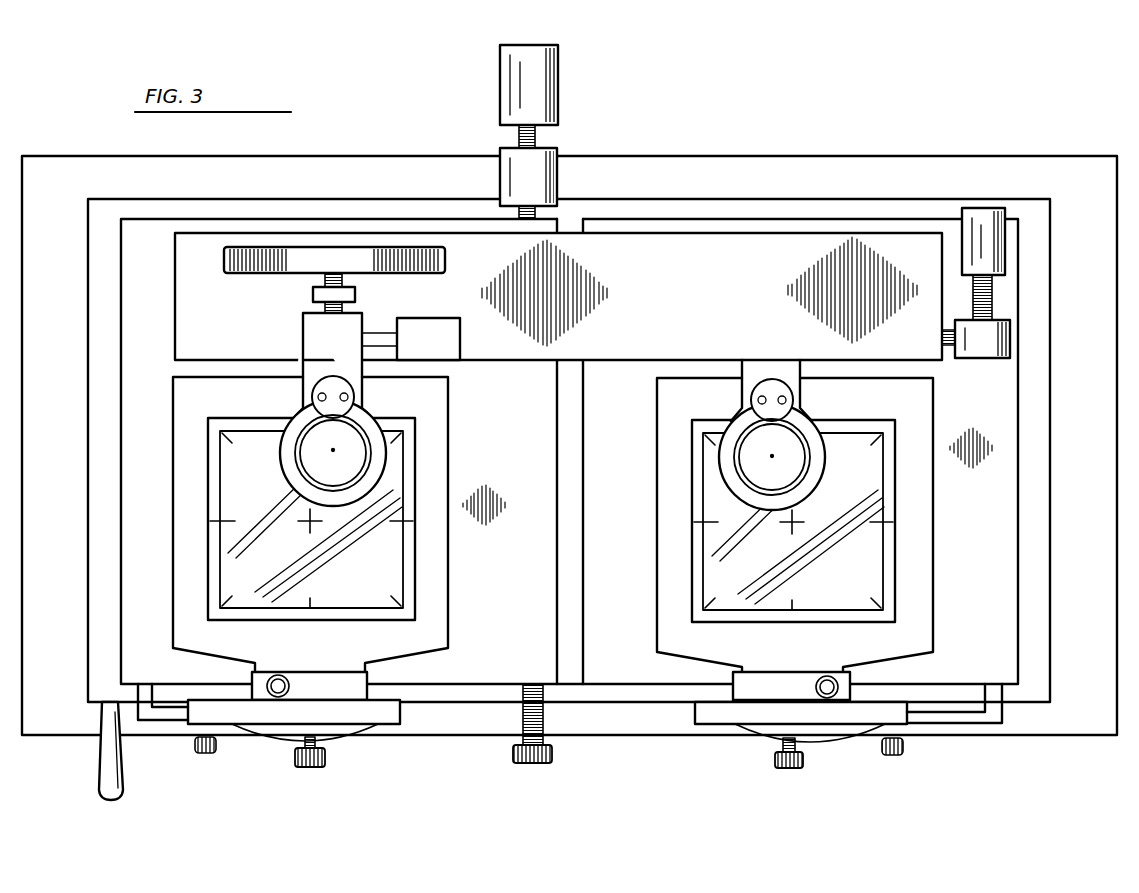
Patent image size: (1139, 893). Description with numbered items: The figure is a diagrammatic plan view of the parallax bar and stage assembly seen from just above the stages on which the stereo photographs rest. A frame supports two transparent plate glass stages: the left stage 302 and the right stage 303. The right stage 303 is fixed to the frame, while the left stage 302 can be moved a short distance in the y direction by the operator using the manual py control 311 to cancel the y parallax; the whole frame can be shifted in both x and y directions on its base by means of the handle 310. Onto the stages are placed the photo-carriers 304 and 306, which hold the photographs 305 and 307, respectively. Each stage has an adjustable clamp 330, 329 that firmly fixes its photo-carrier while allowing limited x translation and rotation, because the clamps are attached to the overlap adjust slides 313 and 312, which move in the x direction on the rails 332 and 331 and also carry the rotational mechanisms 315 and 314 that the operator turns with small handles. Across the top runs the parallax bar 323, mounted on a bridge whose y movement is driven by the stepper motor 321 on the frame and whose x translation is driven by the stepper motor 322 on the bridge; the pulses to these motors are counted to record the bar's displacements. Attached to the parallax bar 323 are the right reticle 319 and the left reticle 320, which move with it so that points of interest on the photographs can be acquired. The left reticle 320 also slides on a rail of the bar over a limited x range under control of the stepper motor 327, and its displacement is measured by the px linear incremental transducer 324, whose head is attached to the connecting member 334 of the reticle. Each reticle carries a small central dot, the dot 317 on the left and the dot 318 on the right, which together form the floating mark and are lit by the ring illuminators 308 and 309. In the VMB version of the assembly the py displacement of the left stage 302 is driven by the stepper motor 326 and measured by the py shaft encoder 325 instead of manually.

The left stage 302 is at (155, 232).
The right stage 303 is at (990, 378).
The photo-carrier 304 is at (212, 568).
The photograph 305 is at (375, 588).
The photo-carrier 306 is at (887, 543).
The photograph 307 is at (870, 586).
The ring illuminator 308 is at (333, 452).
The ring illuminator lamp 309 is at (800, 481).
The handle 310 is at (101, 758).
The manual py control 311 is at (552, 757).
The overlap adjust slide 312 is at (887, 712).
The overlap adjust slide 313 is at (387, 726).
The rotational mechanism 314 is at (803, 759).
The rotational mechanism 315 is at (325, 757).
The dot 317 is at (312, 470).
The dot 318 is at (773, 456).
The right reticle 319 is at (802, 422).
The left reticle 320 is at (296, 414).
The stepper motor 321 is at (980, 210).
The stepper motor 322 is at (1010, 337).
The parallax bar 323 is at (713, 275).
The px linear incremental transducer 324 is at (278, 274).
The py shaft encoder 325 is at (557, 150).
The stepper motor 326 is at (558, 82).
The stepper motor 327 is at (461, 338).
The adjustable clamp 329 is at (814, 682).
The adjustable clamp 330 is at (293, 673).
The rail 331 is at (1000, 716).
The rail 332 is at (171, 715).
The connecting member 334 is at (303, 336).